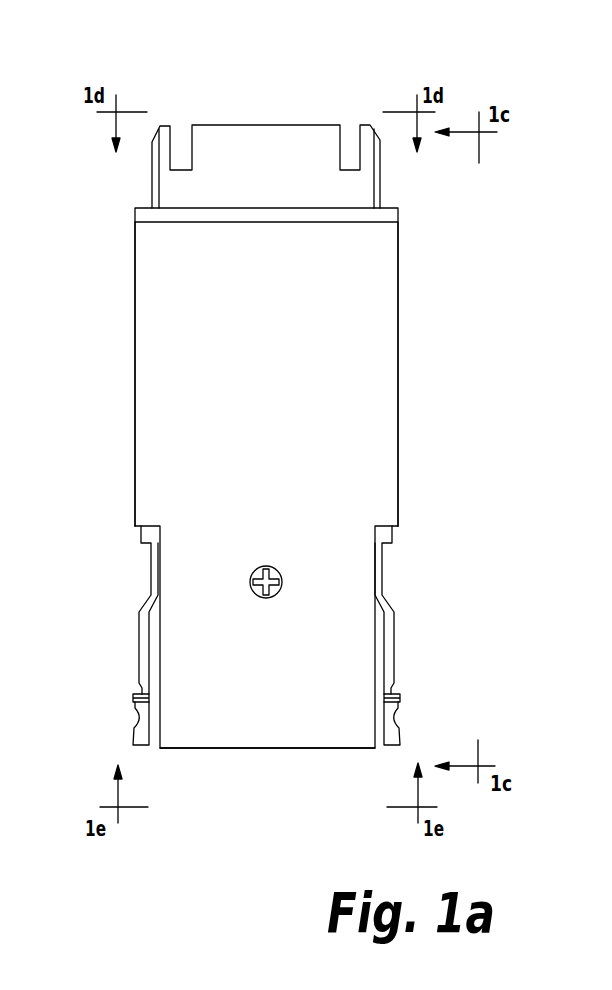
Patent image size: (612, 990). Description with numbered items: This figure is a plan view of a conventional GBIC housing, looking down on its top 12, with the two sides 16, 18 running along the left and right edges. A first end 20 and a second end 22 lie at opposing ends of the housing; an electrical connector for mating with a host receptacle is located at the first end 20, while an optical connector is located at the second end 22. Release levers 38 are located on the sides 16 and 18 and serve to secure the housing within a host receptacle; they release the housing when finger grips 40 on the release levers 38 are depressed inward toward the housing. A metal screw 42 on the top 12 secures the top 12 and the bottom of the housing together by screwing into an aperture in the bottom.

The top 12 is at (237, 368).
The side 16 is at (398, 320).
The side 18 is at (135, 475).
The first end 20 is at (263, 125).
The second end 22 is at (260, 748).
The release levers 38 is at (143, 657).
The finger grips 40 is at (138, 728).
The metal screw 42 is at (268, 575).